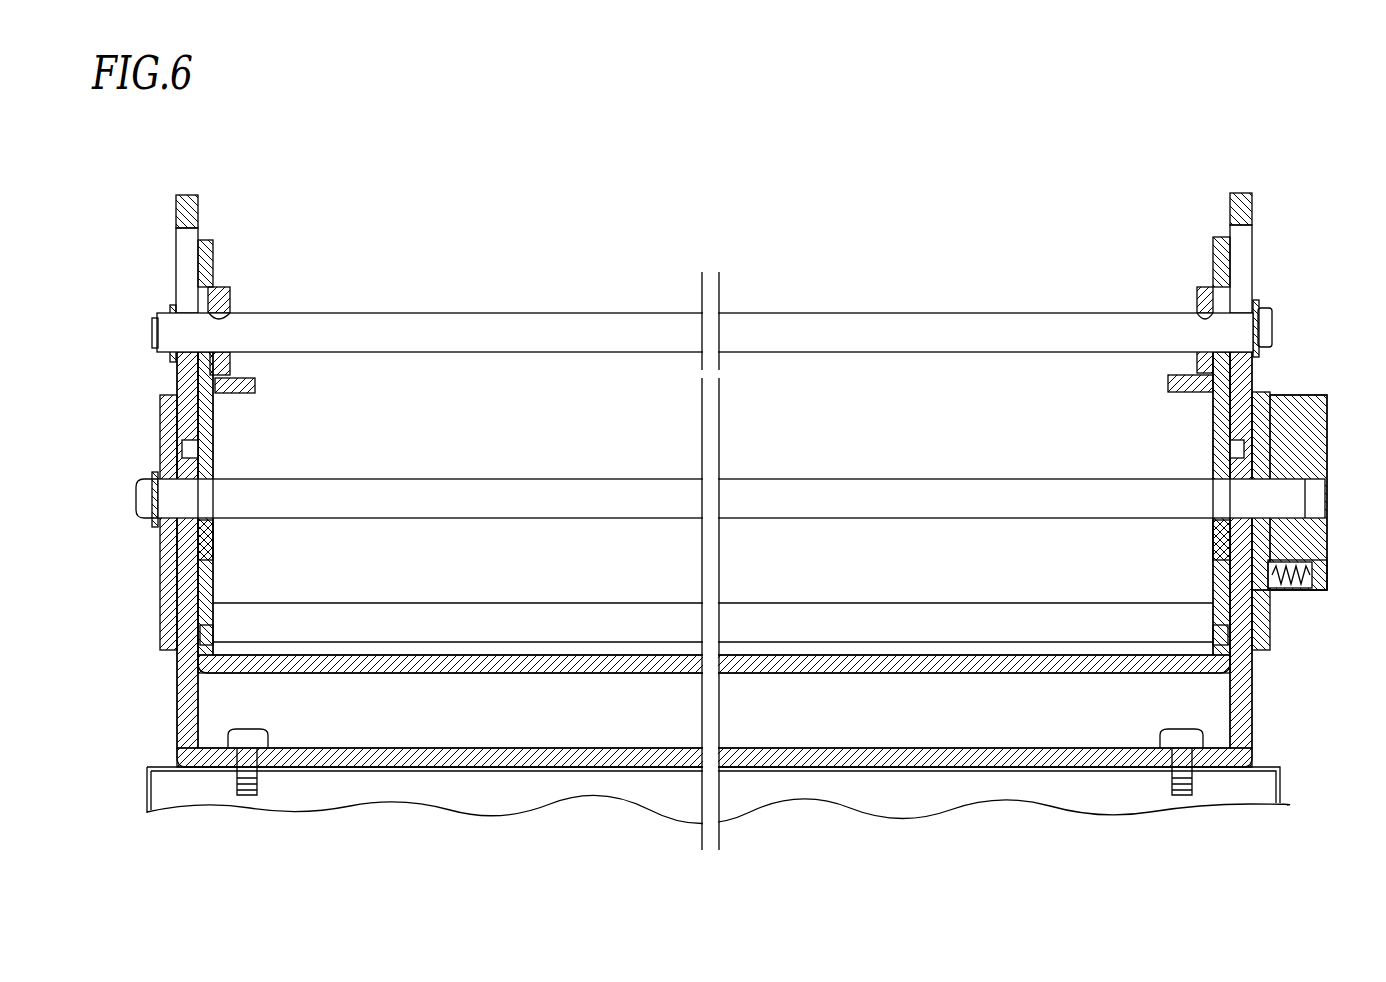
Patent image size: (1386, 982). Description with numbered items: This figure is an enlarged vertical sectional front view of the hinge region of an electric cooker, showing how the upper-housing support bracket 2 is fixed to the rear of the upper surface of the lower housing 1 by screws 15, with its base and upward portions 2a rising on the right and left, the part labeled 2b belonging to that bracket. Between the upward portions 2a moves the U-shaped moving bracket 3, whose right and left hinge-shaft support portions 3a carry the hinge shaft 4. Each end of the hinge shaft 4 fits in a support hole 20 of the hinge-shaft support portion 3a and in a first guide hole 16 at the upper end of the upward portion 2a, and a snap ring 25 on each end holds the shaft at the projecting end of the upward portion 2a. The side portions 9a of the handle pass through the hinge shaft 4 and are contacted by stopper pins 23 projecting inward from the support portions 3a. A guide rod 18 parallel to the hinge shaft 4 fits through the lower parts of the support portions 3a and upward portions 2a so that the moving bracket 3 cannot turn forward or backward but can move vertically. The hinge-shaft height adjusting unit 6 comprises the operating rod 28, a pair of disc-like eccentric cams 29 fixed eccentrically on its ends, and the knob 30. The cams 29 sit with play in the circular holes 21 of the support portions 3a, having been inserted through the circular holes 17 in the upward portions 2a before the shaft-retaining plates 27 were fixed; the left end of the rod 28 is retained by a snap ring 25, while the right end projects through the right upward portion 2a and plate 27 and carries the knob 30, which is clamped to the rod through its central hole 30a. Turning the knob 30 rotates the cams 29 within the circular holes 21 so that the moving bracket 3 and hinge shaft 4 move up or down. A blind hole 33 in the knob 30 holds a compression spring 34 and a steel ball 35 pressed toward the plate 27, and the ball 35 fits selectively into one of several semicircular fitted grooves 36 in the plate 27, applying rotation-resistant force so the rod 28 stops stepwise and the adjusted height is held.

The lower housing 1 is at (1282, 783).
The upper-housing support bracket 2 is at (728, 615).
The upward portion 2a is at (178, 710).
The bottom wall of case 2b is at (888, 757).
The moving bracket 3 is at (714, 615).
The hinge-shaft support portion 3a is at (215, 418).
The hinge shaft 4 is at (820, 312).
The hinge-shaft height adjusting unit 6 is at (1336, 580).
The side portion of handle 9a is at (218, 292).
The screw 15 is at (240, 783).
The first guide hole 16 is at (178, 240).
The circular hole 17 is at (192, 446).
The guide rod 18 is at (828, 601).
The support hole 20 is at (212, 318).
The circular hole 21 is at (207, 625).
The stopper pin 23 is at (256, 386).
The snap ring 25 is at (172, 305).
The shaft-retaining plate 27 is at (162, 618).
The operating rod 28 is at (830, 477).
The eccentric cam 29 is at (213, 555).
The knob 30 is at (1325, 521).
The central hole 30a is at (1308, 482).
The blind hole 33 is at (1327, 555).
The compression spring 34 is at (1310, 572).
The steel ball 35 is at (1300, 565).
The fitted groove 36 is at (1268, 412).